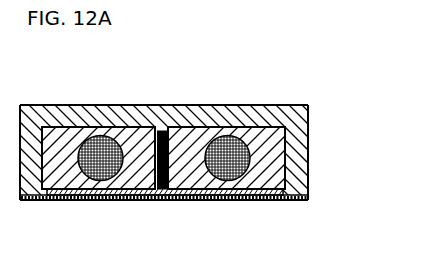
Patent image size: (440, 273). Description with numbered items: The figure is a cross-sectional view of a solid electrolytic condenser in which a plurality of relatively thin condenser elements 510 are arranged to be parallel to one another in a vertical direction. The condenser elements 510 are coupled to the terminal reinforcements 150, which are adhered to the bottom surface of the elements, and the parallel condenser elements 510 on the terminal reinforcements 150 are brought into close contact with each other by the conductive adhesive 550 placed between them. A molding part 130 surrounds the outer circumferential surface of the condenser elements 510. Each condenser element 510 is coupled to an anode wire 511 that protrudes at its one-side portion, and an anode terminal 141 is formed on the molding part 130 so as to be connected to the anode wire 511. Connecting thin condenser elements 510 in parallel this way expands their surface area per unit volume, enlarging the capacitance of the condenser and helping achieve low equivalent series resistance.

The condenser element 510 is at (268, 158).
The molding part 130 is at (76, 112).
The conductive adhesive 550 is at (162, 131).
The anode wire 511 is at (228, 148).
The anode terminal 141 is at (140, 201).
The terminal reinforcements 150 is at (213, 201).